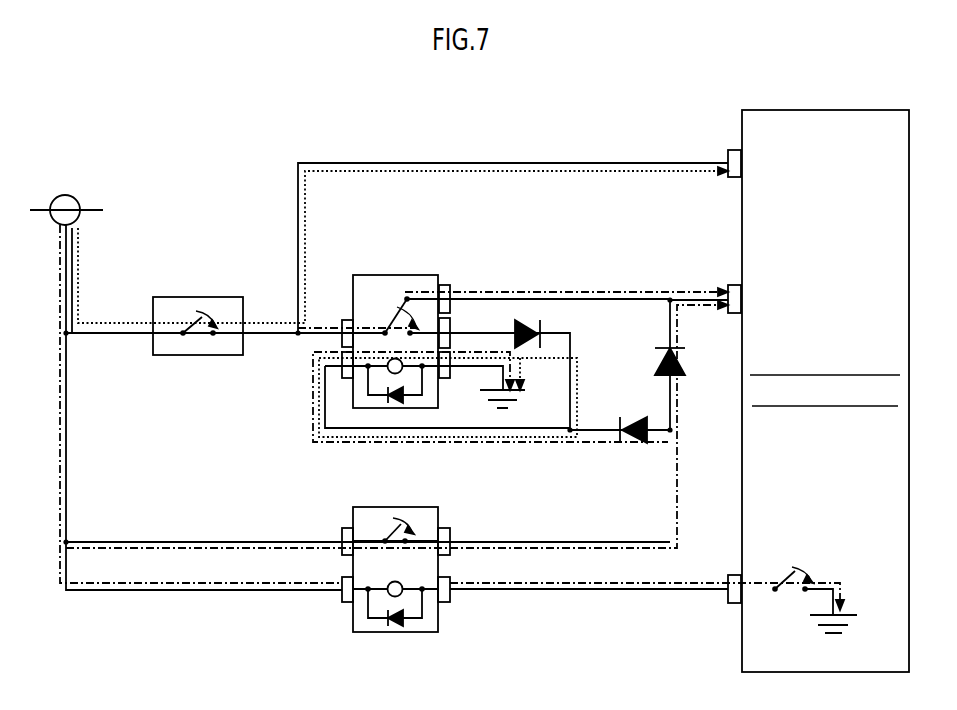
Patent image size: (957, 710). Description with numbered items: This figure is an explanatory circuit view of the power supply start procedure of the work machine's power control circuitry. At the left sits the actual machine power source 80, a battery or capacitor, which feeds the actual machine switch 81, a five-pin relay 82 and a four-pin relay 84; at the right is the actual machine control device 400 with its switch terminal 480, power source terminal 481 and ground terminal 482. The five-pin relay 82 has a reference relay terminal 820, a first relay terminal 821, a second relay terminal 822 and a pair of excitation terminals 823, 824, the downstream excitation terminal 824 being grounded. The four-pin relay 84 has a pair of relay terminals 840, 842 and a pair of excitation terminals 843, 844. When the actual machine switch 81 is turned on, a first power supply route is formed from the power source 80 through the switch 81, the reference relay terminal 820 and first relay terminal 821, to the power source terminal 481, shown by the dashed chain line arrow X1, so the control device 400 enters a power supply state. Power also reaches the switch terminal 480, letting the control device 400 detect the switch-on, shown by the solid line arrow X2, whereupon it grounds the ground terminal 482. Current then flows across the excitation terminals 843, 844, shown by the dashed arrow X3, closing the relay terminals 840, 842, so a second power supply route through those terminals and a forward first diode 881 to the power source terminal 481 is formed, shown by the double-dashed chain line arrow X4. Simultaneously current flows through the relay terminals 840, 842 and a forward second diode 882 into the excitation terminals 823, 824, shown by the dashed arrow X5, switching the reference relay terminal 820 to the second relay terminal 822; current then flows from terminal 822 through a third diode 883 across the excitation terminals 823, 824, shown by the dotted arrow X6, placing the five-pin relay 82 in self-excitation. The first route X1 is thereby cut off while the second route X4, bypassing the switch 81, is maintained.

The actual machine power source 80 is at (70, 196).
The actual machine switch 81 is at (222, 297).
The five-pin relay 82 is at (414, 330).
The reference relay terminal 820 is at (348, 320).
The first relay terminal 821 is at (445, 283).
The second relay terminal 822 is at (450, 327).
The excitation terminal 823 is at (340, 370).
The excitation terminal 824 is at (443, 378).
The four-pin relay 84 is at (395, 560).
The relay terminal 840 is at (348, 528).
The relay terminal 842 is at (443, 528).
The excitation terminal 843 is at (348, 603).
The excitation terminal 844 is at (443, 603).
The first diode 881 is at (678, 374).
The second diode 882 is at (637, 444).
The third diode 883 is at (528, 344).
The actual machine control device 400 is at (797, 368).
The switch terminal 480 is at (732, 148).
The power source terminal 481 is at (733, 286).
The ground terminal 482 is at (733, 573).
The dashed chain line arrow X1 is at (573, 295).
The solid line arrow X2 is at (587, 172).
The dashed arrow X3 is at (58, 498).
The double-dashed chain line arrow X4 is at (678, 482).
The dashed arrow X5 is at (520, 442).
The dotted arrow X6 is at (577, 367).